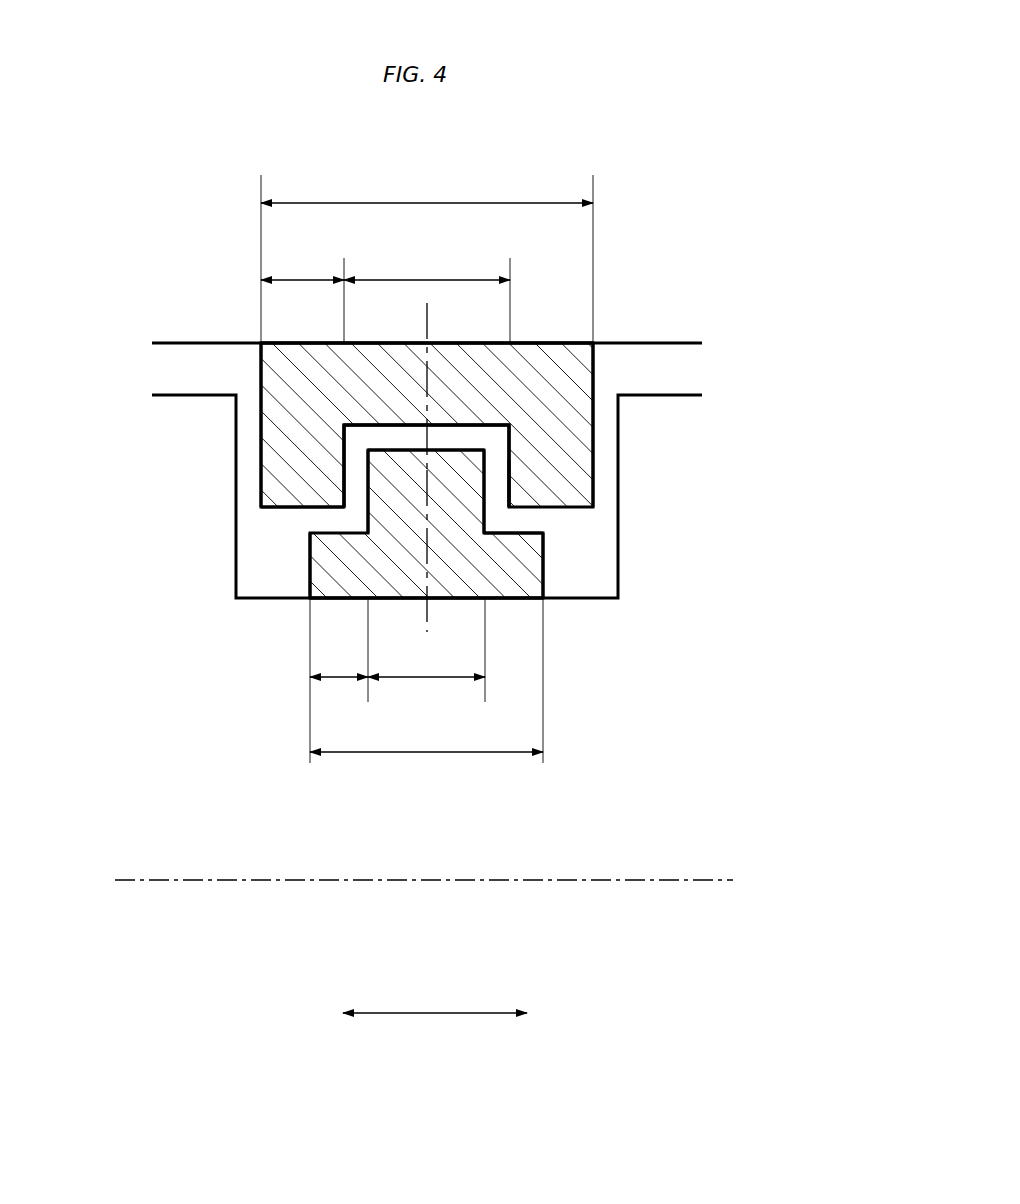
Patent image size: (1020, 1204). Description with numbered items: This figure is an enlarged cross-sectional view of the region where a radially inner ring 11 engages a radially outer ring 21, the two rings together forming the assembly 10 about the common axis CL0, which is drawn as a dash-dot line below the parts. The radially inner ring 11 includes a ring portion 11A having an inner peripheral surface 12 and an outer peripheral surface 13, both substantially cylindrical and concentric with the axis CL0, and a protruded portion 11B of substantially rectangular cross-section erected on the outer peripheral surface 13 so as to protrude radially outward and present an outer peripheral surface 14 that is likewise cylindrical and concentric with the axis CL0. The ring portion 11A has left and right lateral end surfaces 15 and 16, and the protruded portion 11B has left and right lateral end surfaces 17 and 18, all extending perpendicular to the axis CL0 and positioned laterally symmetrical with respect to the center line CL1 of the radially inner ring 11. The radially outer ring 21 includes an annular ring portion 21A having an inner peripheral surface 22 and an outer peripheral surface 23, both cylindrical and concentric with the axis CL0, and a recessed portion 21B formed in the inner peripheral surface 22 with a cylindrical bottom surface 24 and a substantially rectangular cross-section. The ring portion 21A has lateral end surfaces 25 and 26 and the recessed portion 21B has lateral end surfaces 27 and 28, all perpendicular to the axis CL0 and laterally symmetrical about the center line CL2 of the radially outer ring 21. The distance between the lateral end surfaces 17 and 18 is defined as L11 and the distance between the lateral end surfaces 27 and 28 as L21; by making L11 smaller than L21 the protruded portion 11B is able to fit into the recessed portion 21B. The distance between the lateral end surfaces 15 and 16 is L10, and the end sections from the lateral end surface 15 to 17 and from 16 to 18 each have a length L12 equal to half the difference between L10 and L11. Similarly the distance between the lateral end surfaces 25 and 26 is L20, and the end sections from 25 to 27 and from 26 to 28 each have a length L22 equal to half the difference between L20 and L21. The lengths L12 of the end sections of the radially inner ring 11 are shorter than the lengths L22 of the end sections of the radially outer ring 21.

The assembly 10 is at (665, 310).
The radially inner ring 11 is at (640, 542).
The ring portion 11A is at (545, 577).
The protruded portion 11B is at (487, 487).
The inner peripheral surface 12 is at (523, 598).
The outer peripheral surface 13 is at (535, 532).
The outer peripheral surface 14 is at (455, 449).
The lateral end surface 15 is at (310, 551).
The lateral end surface 16 is at (544, 548).
The lateral end surface 17 is at (368, 508).
The lateral end surface 18 is at (510, 477).
The radially outer ring 21 is at (670, 385).
The ring portion 21A is at (258, 398).
The recessed portion 21B is at (407, 440).
The inner peripheral surface 22 is at (294, 508).
The outer peripheral surface 23 is at (287, 343).
The bottom surface 24 is at (380, 425).
The lateral end surface 25 is at (261, 372).
The lateral end surface 26 is at (593, 402).
The lateral end surface 27 is at (343, 478).
The lateral end surface 28 is at (496, 430).
The distance between lateral end surfaces 15 and 16 L10 is at (426, 735).
The distance between lateral end surfaces 17 and 18 L11 is at (426, 662).
The length of end section L12 is at (339, 662).
The distance between lateral end surfaces 25 and 26 L20 is at (427, 190).
The distance between lateral end surfaces 27 and 28 L21 is at (427, 265).
The length of end section L22 is at (302, 265).
The axis CL0 is at (450, 882).
The center line of the radially inner ring CL1 is at (427, 612).
The center line of the radially outer ring CL2 is at (427, 332).